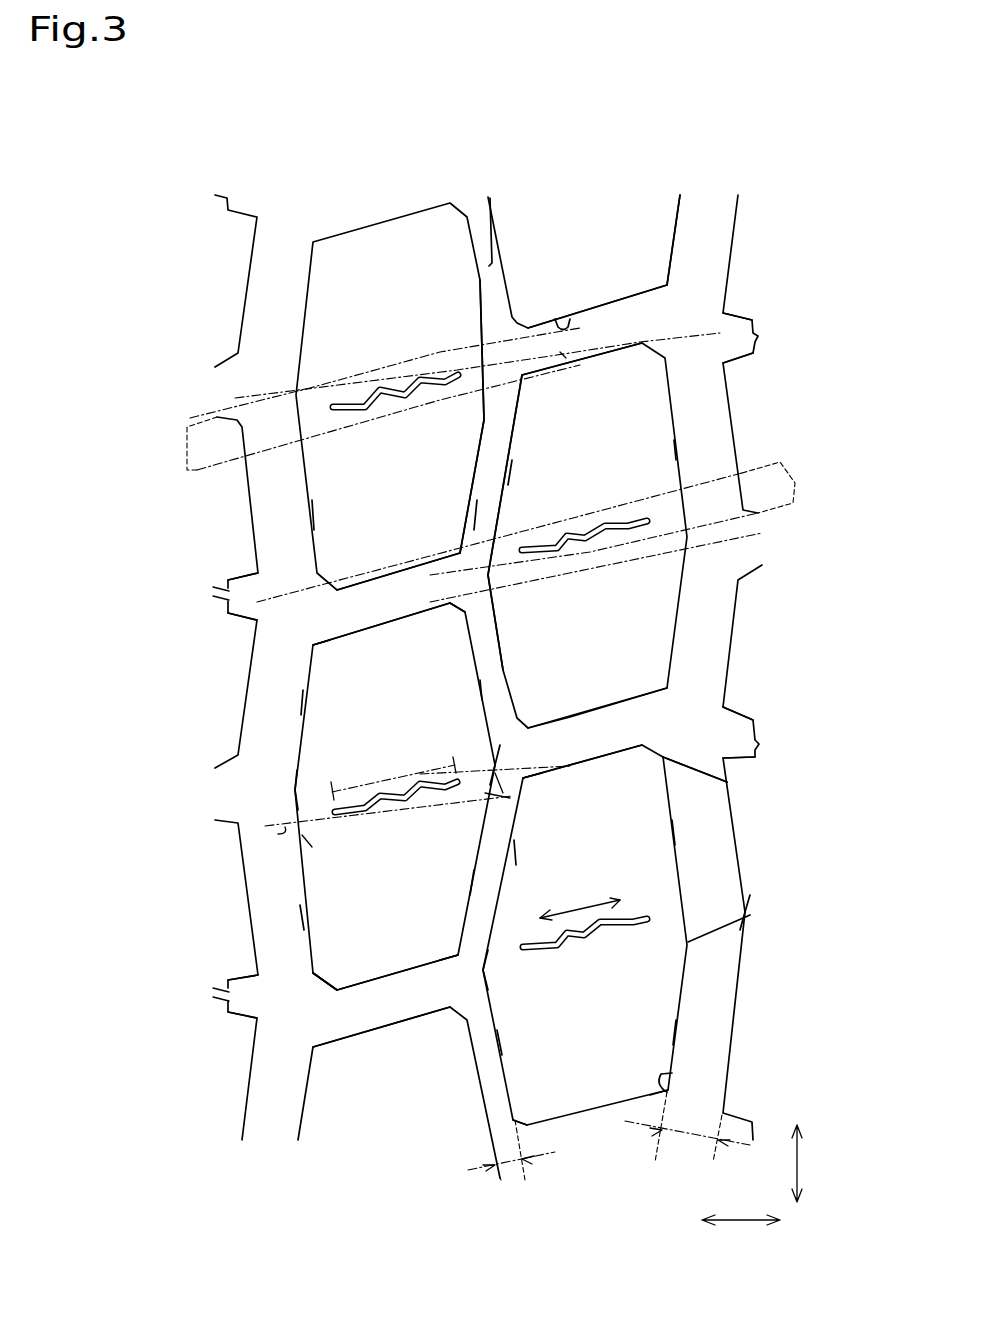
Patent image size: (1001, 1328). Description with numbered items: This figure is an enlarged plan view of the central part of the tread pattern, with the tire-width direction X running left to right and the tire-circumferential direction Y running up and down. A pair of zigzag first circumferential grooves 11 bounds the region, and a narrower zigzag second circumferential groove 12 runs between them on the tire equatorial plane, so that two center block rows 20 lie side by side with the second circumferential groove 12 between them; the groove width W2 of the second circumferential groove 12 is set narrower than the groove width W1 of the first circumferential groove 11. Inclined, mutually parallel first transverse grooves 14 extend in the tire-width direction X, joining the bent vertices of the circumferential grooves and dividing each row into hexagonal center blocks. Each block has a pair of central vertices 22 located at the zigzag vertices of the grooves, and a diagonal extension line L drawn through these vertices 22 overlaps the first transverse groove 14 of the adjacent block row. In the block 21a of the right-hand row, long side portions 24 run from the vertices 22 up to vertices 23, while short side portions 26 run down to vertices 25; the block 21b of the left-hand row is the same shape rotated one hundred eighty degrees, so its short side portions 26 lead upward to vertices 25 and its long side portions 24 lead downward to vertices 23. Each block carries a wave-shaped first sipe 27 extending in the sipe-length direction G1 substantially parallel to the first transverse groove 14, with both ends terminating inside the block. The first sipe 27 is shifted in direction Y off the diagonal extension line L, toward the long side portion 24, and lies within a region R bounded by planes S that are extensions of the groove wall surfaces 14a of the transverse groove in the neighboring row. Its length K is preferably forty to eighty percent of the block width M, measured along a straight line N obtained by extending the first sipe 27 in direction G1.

The first circumferential groove 11 is at (284, 212).
The second circumferential groove 12 is at (480, 278).
The first transverse groove 14 is at (640, 308).
The groove wall surface 14a is at (564, 322).
The center block row 20 is at (393, 212).
The center block 21a is at (650, 248).
The center block 21b is at (345, 335).
The vertex 22 is at (518, 718).
The vertex 23 is at (727, 782).
The long side portion 24 is at (316, 516).
The vertex 25 is at (313, 645).
The short side portion 26 is at (303, 702).
The first sipe 27 is at (398, 417).
The sipe-length direction G1 is at (580, 903).
The length of the first sipe K is at (393, 778).
The diagonal extension line L is at (252, 393).
The width of the center block M is at (388, 810).
The straight line N is at (270, 835).
The region R is at (190, 452).
The plane S is at (200, 418).
The groove width of the first circumferential groove W1 is at (687, 1129).
The groove width of the second circumferential groove W2 is at (511, 1164).
The tire-width direction X is at (741, 1206).
The tire-circumferential direction Y is at (807, 1163).